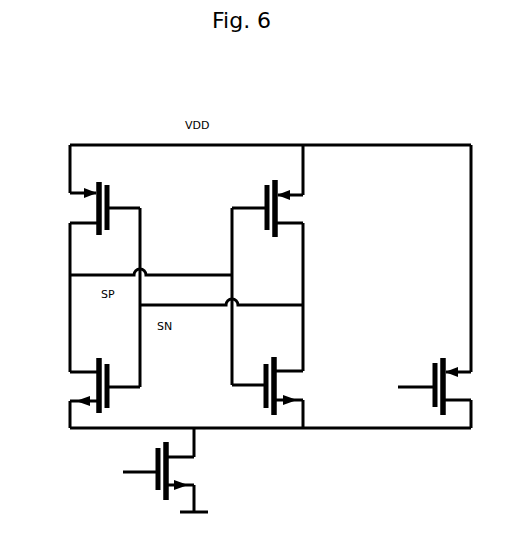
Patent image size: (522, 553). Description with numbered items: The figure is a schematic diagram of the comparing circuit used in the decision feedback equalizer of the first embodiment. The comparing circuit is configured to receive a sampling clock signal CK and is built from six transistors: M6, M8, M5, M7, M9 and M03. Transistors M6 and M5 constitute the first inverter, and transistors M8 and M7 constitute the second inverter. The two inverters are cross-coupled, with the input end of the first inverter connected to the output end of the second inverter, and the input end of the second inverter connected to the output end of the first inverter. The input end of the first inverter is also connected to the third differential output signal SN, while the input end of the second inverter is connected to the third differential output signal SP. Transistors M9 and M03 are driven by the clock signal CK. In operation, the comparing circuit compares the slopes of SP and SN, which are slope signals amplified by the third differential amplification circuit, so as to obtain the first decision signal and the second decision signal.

The transistor M5 is at (82, 385).
The transistor M6 is at (79, 208).
The transistor M7 is at (289, 386).
The transistor M8 is at (290, 208).
The transistor M9 is at (432, 373).
The transistor M03 is at (180, 477).